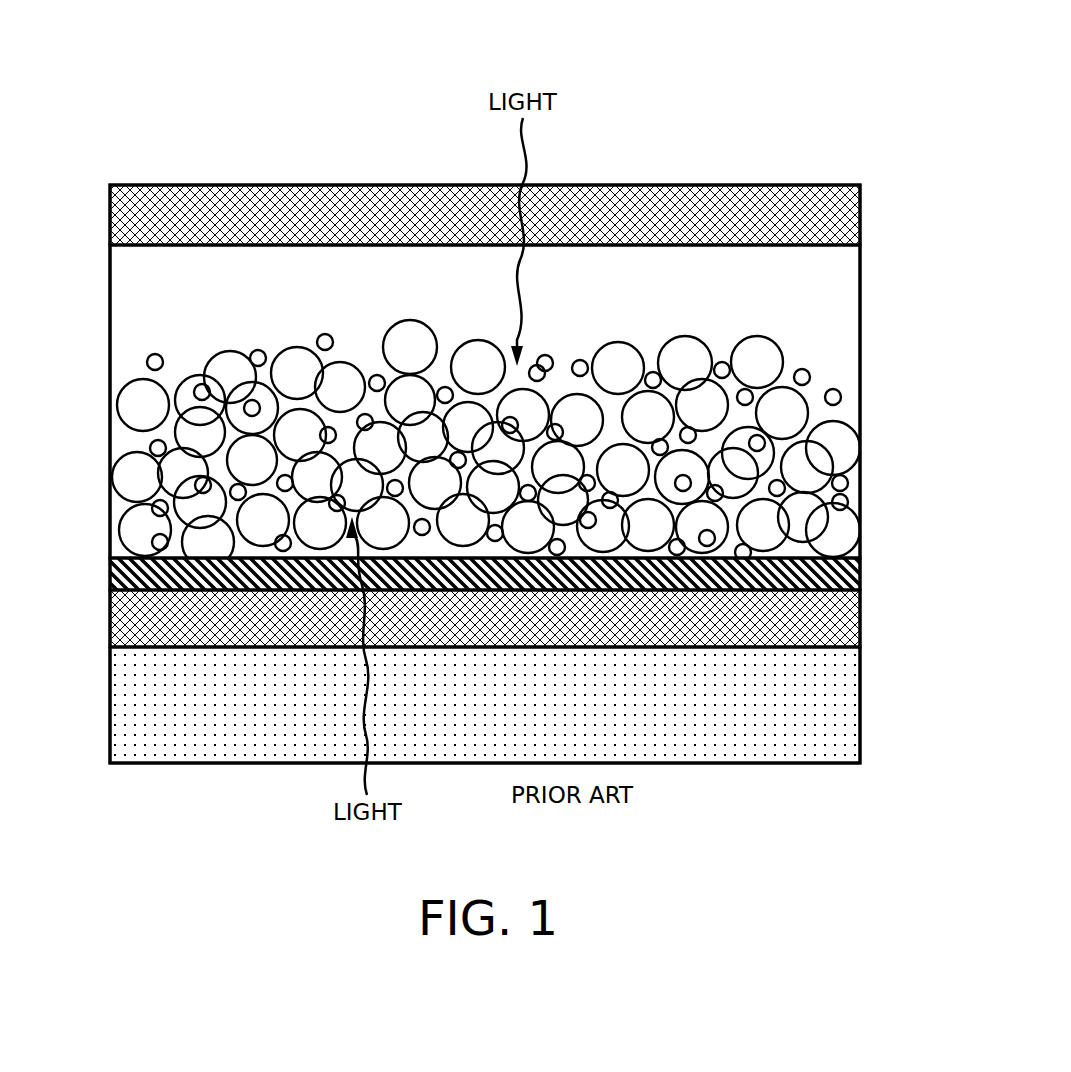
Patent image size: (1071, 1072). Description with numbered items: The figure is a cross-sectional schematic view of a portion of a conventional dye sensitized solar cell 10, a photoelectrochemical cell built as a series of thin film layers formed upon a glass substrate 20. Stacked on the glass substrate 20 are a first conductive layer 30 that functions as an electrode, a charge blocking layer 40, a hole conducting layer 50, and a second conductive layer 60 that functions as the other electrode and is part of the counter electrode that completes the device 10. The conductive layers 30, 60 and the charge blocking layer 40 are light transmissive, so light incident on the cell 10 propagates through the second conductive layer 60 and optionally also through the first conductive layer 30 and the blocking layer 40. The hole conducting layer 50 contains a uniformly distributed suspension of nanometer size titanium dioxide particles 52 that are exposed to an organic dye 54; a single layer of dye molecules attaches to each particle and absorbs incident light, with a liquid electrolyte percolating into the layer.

The dye sensitized solar cell 10 is at (720, 78).
The glass substrate 20 is at (110, 699).
The first conductive layer 30 is at (110, 618).
The charge blocking layer 40 is at (110, 575).
The hole conducting layer 50 is at (110, 351).
The titanium dioxide particles 52 is at (385, 345).
The organic dye 54 is at (253, 352).
The second conductive layer 60 is at (110, 213).